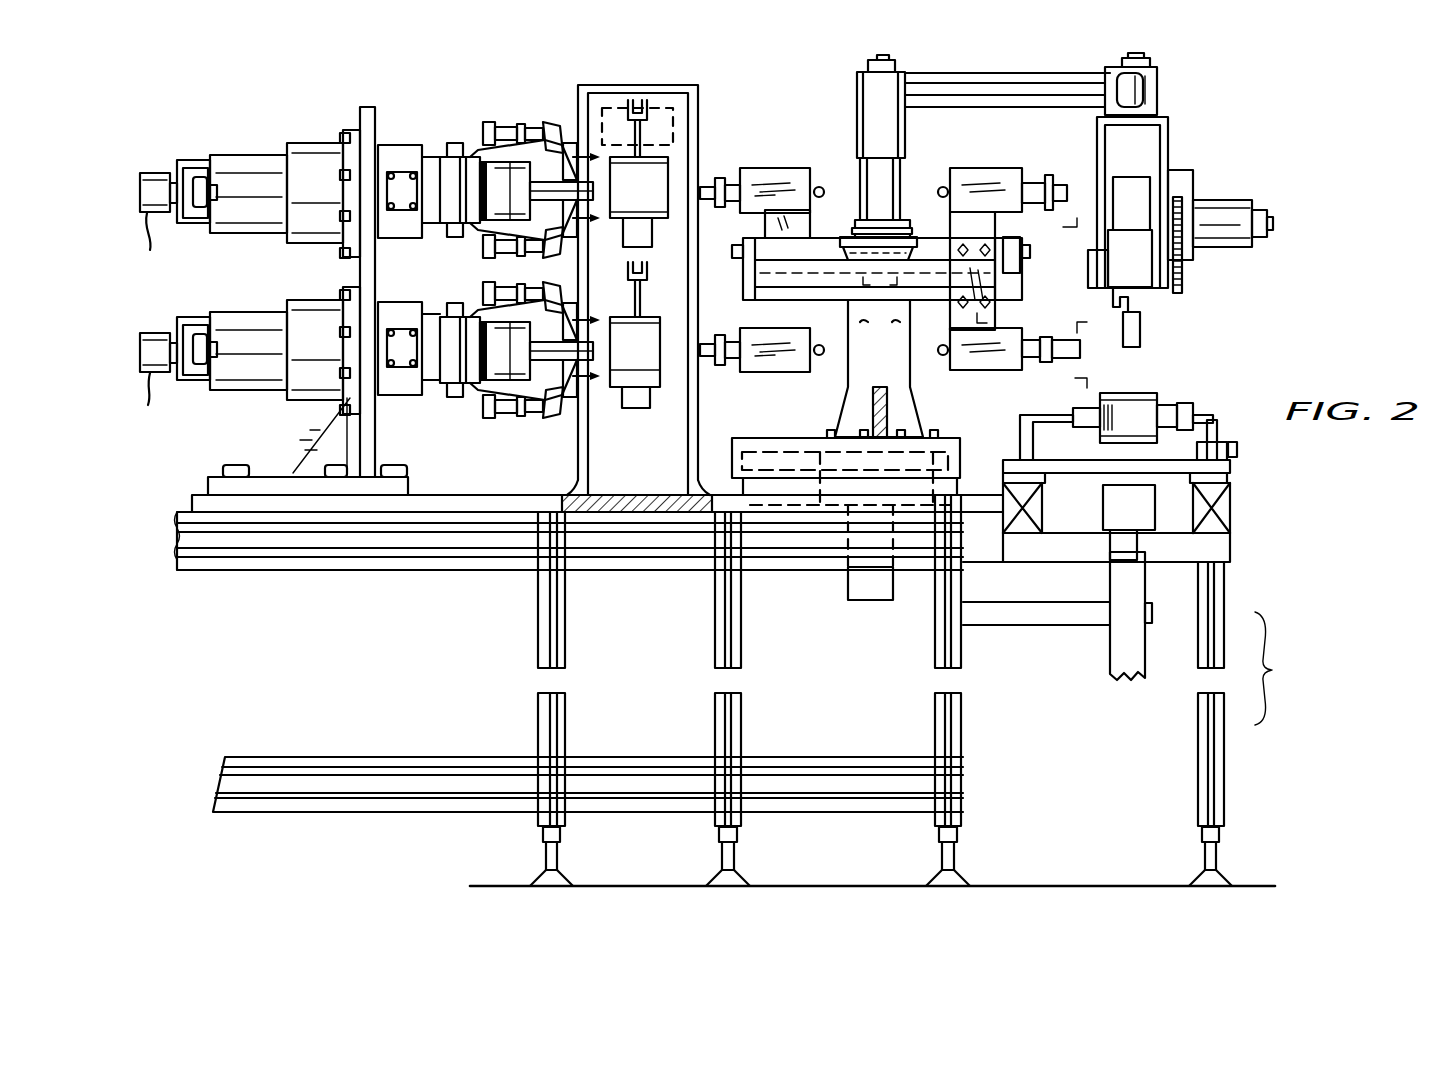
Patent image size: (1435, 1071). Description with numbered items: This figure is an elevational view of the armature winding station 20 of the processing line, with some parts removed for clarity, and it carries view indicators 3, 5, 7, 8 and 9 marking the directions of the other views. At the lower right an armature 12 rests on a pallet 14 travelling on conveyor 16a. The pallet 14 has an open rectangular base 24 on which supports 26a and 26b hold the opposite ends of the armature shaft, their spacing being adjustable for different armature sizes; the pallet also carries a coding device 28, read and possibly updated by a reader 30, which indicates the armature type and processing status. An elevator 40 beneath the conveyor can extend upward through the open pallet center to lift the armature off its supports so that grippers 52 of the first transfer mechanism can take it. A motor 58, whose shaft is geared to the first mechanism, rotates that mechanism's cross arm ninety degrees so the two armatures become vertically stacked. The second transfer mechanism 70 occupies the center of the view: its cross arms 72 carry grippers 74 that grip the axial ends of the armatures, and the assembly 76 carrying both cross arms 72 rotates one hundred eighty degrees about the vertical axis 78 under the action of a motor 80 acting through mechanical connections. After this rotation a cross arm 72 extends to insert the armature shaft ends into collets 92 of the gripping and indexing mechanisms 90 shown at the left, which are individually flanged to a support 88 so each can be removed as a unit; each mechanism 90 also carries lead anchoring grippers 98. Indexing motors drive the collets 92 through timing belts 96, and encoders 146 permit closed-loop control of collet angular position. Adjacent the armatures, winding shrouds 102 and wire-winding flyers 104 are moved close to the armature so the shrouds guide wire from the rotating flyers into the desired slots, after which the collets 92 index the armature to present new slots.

The section line 7- 7 is at (75, 57).
The section line 8- 8 is at (680, 40).
The section line 5- 5 is at (1080, 30).
The section line 3- 3 is at (1365, 50).
The section line 9- 9 is at (602, 186).
The armature 12 is at (1150, 395).
The pallet 14 is at (1244, 486).
The conveyor line 16a is at (1242, 518).
The armature winding station 20 is at (531, 78).
The open rectangular base 24 is at (1050, 476).
The support 26a is at (1018, 436).
The support 26b is at (1215, 423).
The coding device 28 is at (1228, 442).
The reader 30 is at (1238, 455).
The elevator 40 is at (1116, 668).
The gripper 52 is at (1140, 335).
The motor 58 is at (1240, 205).
The transfer mechanism 70 is at (826, 392).
The cross arm 72 is at (810, 228).
The gripper 74 is at (718, 182).
The assembly 76 is at (908, 368).
The vertical axis 78 is at (882, 90).
The motor 80 is at (846, 592).
The support 88 is at (375, 128).
The gripping and indexing mechanism 90 is at (250, 136).
The collet 92 is at (547, 158).
The timing belt 96 is at (200, 178).
The lead anchoring gripper 98 is at (590, 220).
The winding shroud 102 is at (668, 205).
The wire-winding flyer 104 is at (648, 120).
The encoder 146 is at (150, 228).